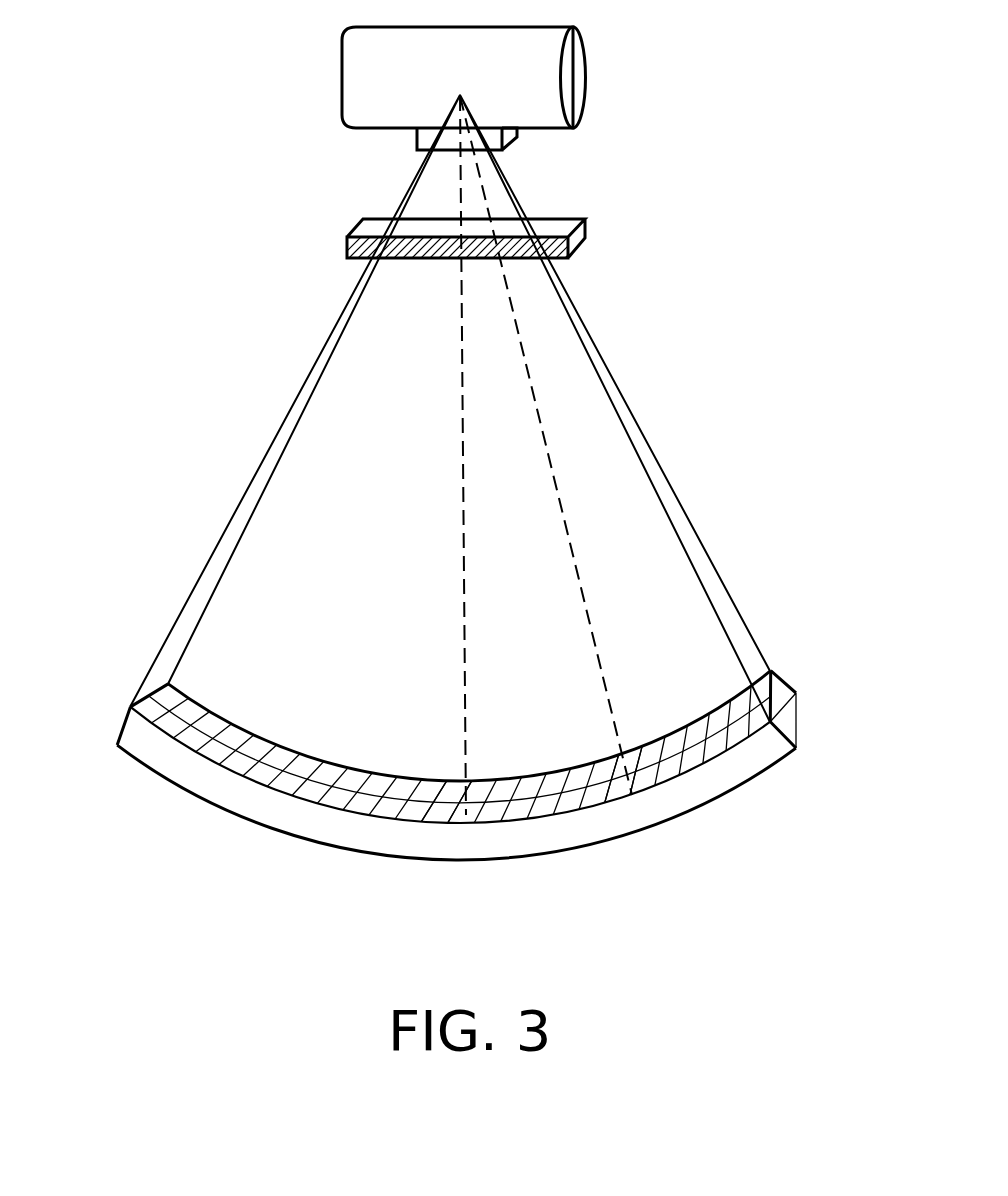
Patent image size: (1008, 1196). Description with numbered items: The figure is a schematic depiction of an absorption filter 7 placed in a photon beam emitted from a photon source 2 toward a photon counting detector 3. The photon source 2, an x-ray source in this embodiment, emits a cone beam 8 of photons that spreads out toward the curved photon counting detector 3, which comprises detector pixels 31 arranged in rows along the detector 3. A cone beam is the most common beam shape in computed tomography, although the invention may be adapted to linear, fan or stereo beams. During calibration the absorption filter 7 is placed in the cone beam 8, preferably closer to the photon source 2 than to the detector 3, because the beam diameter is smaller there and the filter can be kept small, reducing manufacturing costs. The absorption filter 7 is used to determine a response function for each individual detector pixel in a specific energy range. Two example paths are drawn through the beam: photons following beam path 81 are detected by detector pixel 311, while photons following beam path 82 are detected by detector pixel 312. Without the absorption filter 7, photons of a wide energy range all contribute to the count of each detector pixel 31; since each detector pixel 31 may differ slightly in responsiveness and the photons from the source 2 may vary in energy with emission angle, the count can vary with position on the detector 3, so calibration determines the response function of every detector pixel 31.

The photon source 2 is at (575, 82).
The absorption filter 7 is at (585, 232).
The cone beam 8 is at (293, 568).
The beam path 81 is at (459, 477).
The beam path 82 is at (594, 640).
The photon counting detector 3 is at (441, 800).
The detector pixels 31 is at (295, 763).
The detector pixel 311 is at (463, 827).
The detector pixel 312 is at (630, 795).